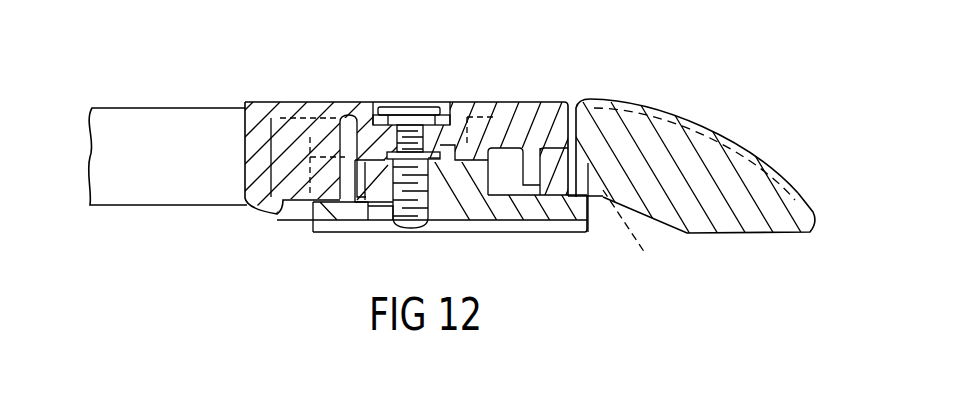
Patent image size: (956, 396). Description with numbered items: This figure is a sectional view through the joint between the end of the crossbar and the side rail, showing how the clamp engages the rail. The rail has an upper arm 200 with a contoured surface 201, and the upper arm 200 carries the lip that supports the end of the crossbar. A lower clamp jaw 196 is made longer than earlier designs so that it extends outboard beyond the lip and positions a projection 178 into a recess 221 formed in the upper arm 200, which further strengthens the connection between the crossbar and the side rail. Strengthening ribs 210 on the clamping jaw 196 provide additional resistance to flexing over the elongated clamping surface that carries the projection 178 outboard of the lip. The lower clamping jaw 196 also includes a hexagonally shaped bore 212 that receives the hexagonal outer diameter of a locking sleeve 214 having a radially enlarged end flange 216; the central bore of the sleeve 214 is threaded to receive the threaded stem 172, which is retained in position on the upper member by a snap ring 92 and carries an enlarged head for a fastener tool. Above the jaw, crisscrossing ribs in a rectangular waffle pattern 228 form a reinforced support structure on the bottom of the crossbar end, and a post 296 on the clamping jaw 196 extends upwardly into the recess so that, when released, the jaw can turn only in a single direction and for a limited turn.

The snap ring 92 is at (415, 143).
The threaded stem 172 is at (407, 130).
The projection 178 is at (645, 110).
The lower clamp jaw 196 is at (477, 230).
The upper arm 200 is at (730, 177).
The contoured surface 201 is at (723, 130).
The strengthening ribs 210 is at (596, 225).
The hexagonally shaped bore 212 is at (393, 225).
The locking sleeve 214 is at (454, 222).
The end flange 216 is at (431, 224).
The recess 221 is at (645, 253).
The waffle pattern 228 is at (278, 217).
The post 296 is at (343, 116).